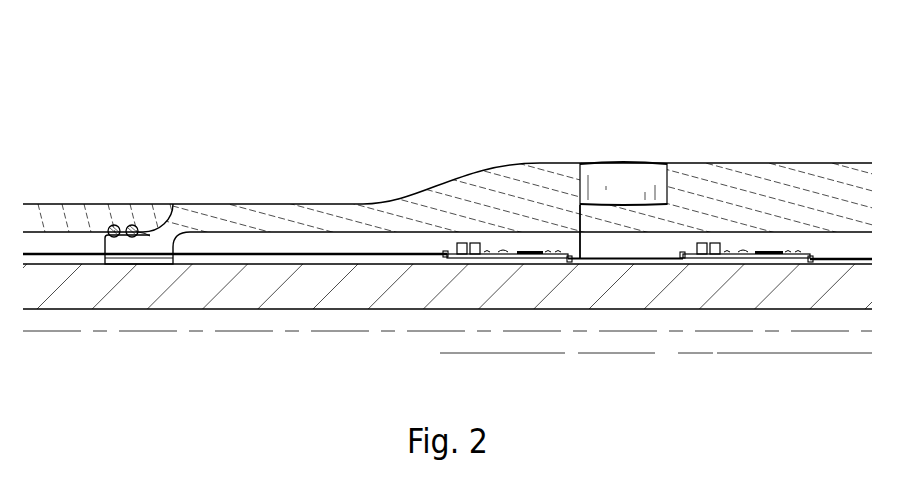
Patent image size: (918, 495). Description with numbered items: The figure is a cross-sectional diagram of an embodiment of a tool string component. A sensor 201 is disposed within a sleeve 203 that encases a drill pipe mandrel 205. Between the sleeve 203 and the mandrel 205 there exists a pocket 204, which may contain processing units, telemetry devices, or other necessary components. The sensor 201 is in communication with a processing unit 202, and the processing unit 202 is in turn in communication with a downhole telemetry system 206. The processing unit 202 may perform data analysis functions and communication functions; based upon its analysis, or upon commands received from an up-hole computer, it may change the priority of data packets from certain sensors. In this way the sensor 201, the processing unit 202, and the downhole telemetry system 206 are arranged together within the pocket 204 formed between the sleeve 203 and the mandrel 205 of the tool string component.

The sensor 201 is at (618, 173).
The processing unit 202 is at (475, 243).
The sleeve 203 is at (317, 204).
The pocket 204 is at (357, 245).
The drill pipe mandrel 205 is at (305, 297).
The downhole telemetry system 206 is at (205, 243).